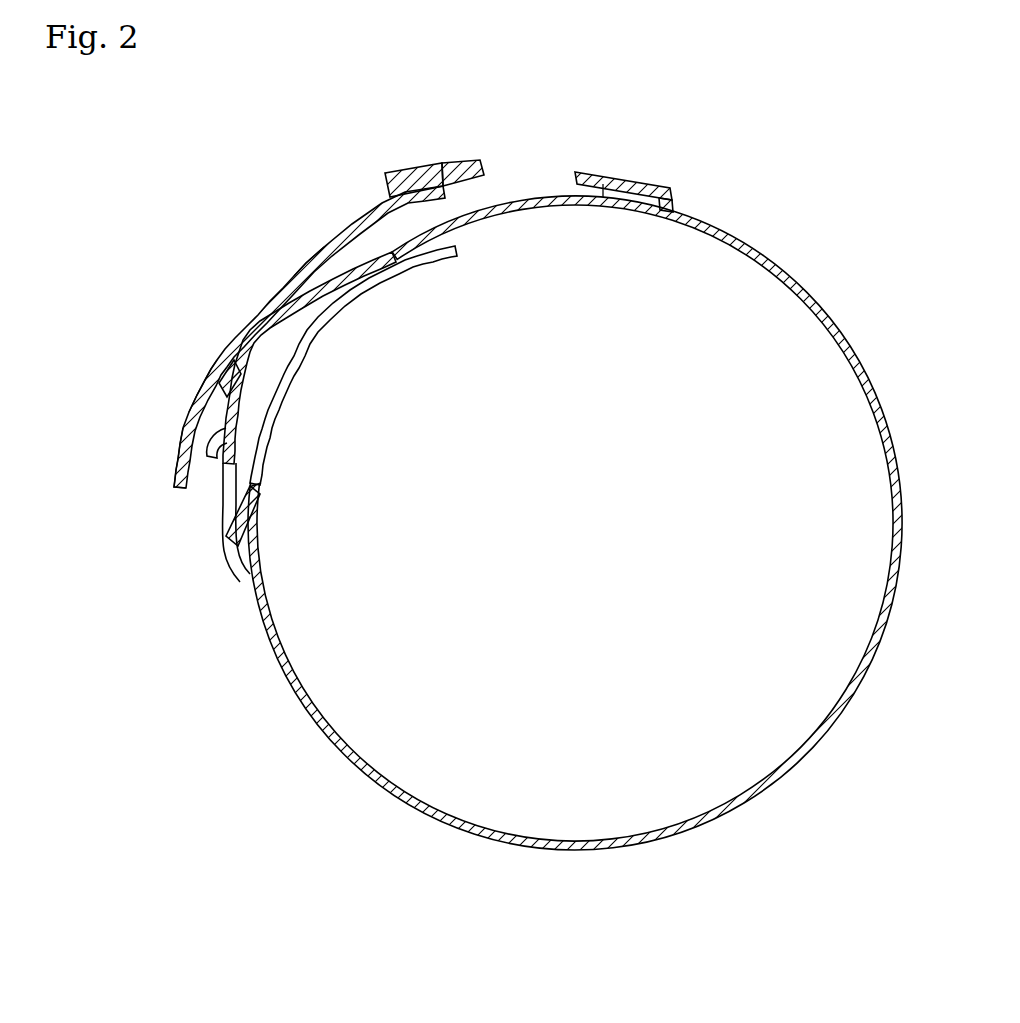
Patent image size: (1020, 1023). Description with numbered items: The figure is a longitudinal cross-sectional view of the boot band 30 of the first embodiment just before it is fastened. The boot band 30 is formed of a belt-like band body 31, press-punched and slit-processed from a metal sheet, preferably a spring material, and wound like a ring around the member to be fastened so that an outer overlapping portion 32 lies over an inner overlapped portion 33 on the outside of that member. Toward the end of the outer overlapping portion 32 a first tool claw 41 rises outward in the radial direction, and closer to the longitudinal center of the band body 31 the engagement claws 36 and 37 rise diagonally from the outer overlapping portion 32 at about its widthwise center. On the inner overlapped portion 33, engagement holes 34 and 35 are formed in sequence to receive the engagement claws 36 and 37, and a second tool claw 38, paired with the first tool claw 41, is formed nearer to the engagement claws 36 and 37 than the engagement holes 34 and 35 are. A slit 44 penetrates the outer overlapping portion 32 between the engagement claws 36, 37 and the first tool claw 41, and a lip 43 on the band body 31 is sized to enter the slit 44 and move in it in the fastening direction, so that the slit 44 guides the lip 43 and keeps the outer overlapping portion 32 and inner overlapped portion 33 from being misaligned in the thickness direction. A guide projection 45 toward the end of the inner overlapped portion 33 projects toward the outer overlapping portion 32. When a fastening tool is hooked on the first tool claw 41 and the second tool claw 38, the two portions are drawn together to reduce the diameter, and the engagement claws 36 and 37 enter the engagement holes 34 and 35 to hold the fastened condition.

The boot band 30 is at (772, 188).
The band body 31 is at (821, 302).
The outer overlapping portion 32 is at (274, 277).
The inner overlapped portion 33 is at (280, 423).
The engagement hole 34 is at (208, 373).
The engagement hole 35 is at (183, 447).
The engagement claw 36 is at (220, 393).
The engagement claw 37 is at (203, 453).
The second tool claw 38 is at (618, 172).
The first tool claw 41 is at (417, 168).
The lip 43 is at (258, 307).
The slit 44 is at (303, 263).
The guide projection 45 is at (220, 552).